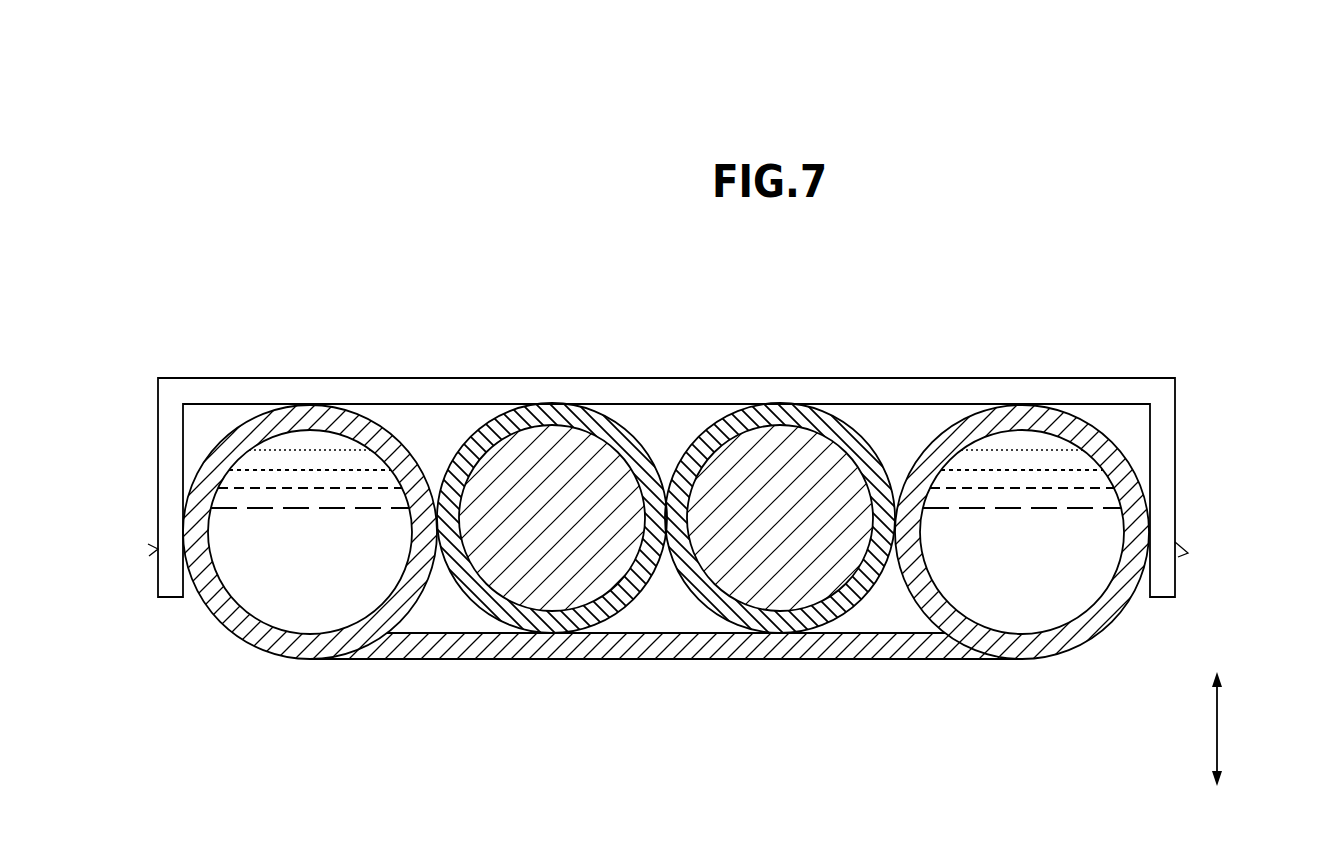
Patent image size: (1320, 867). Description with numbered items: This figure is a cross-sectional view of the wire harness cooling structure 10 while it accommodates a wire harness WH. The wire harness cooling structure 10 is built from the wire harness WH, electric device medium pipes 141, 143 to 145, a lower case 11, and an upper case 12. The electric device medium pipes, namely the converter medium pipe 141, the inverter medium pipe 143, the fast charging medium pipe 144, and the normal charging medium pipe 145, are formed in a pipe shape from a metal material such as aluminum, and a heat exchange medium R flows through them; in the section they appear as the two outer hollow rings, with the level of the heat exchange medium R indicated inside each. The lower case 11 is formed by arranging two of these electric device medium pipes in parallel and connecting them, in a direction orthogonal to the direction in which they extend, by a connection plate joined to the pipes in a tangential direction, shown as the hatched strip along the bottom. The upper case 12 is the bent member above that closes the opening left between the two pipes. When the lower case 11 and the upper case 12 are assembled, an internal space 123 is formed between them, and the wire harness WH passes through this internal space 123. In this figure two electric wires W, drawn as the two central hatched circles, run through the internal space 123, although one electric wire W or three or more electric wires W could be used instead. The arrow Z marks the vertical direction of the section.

The wire harness cooling structure 10 is at (566, 346).
The lower case 11 is at (666, 543).
The upper case 12 is at (443, 381).
The internal space 123 is at (664, 437).
The converter medium pipe 141 is at (292, 577).
The inverter medium pipe 143 is at (237, 634).
The fast charging medium pipe 144 is at (1031, 577).
The normal charging medium pipe 145 is at (1092, 640).
The heat exchange medium R is at (314, 498).
The wire harness WH is at (480, 622).
The electric wire W is at (708, 622).
The Z direction Z is at (1218, 706).